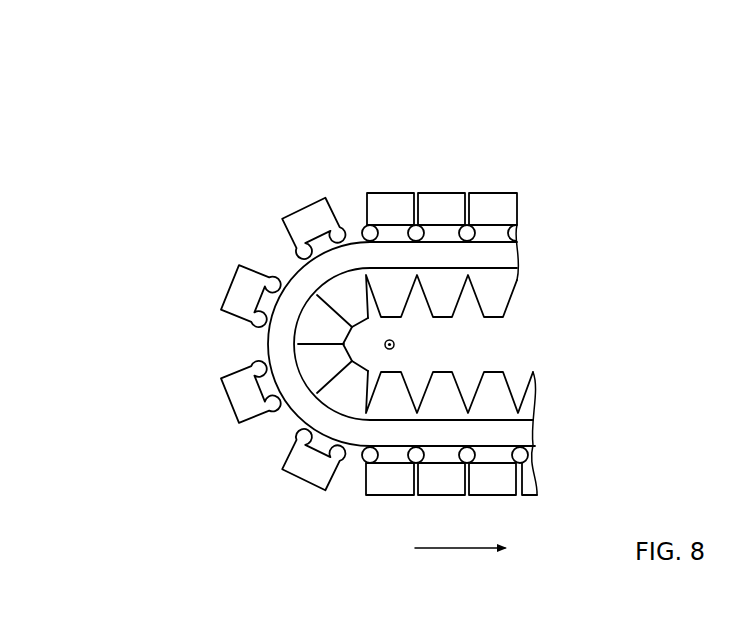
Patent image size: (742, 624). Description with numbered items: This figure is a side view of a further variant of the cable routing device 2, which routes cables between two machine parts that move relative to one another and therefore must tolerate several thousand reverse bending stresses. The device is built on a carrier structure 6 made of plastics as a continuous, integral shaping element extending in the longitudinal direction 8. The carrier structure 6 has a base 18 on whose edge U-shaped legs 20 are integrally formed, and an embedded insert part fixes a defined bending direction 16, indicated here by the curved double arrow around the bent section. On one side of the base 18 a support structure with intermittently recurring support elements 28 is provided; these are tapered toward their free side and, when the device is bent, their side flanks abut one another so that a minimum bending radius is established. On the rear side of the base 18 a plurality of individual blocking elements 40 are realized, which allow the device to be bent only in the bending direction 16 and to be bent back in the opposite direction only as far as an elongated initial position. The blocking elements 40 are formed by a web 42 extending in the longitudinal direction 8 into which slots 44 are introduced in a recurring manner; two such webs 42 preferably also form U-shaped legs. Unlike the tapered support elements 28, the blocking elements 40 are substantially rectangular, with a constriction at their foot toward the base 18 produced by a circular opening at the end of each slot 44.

The cable routing device 2 is at (557, 116).
The carrier structure 6 is at (302, 198).
The longitudinal direction 8 is at (460, 548).
The bending direction 16 is at (162, 257).
The base 18 is at (522, 437).
The U-shaped legs 20 is at (493, 312).
The support elements 28 is at (495, 380).
The blocking elements 40 is at (485, 208).
The web 42 is at (248, 397).
The slots 44 is at (350, 237).